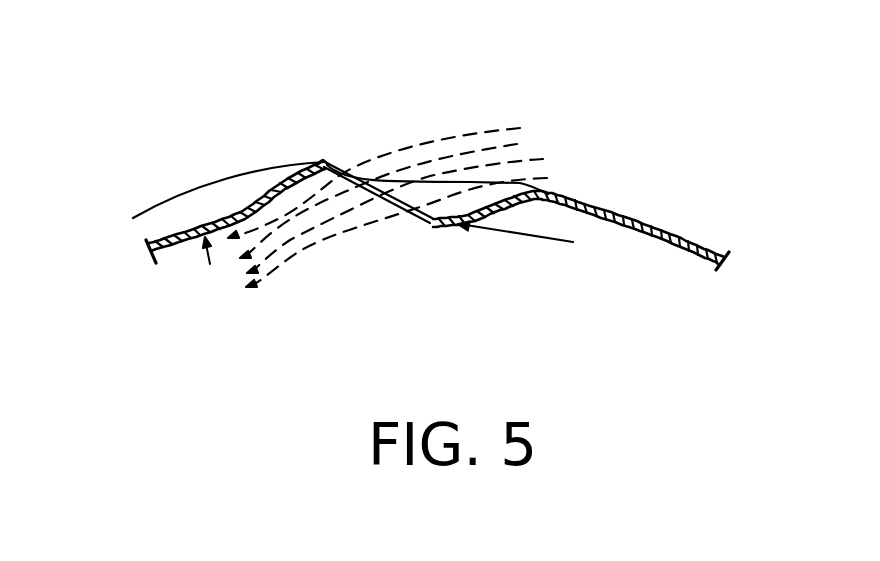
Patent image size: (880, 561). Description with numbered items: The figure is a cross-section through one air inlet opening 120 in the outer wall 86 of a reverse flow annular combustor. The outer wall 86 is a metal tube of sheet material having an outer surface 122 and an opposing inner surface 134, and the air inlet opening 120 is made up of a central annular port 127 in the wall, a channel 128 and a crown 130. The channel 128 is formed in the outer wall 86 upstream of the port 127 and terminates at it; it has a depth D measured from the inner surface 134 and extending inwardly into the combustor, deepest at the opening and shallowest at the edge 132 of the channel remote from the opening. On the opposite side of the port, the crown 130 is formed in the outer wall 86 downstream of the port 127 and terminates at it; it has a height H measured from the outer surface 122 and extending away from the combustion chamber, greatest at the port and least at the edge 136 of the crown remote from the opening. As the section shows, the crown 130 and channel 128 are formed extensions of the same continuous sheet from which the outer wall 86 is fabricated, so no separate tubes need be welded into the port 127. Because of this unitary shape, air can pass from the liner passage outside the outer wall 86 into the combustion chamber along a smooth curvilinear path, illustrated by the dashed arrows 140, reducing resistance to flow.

The outer wall 86 is at (660, 216).
The air inlet opening 120 is at (343, 164).
The outer surface 122 is at (607, 207).
The central annular port 127 is at (330, 163).
The channel 128 is at (475, 229).
The crown 130 is at (281, 178).
The edge of the channel 132 is at (531, 202).
The inner surface 134 is at (593, 207).
The edge of the crown 136 is at (240, 207).
The dashed arrows 140 is at (500, 160).
The height H is at (179, 189).
The depth D is at (566, 191).